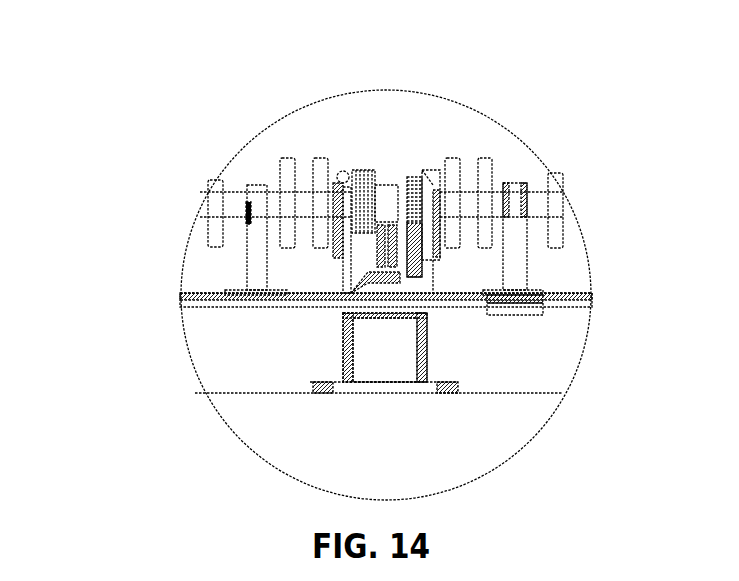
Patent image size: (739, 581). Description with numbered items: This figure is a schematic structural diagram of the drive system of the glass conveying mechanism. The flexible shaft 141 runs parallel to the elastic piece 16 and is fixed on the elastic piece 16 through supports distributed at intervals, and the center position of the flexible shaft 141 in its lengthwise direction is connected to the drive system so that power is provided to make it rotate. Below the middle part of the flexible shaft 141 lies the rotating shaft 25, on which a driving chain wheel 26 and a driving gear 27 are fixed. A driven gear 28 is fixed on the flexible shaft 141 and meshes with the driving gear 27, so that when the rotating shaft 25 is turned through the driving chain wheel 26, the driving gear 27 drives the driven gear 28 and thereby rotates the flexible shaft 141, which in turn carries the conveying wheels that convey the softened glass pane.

The elastic piece 16 is at (570, 308).
The rotating shaft 25 is at (363, 253).
The driving chain wheel 26 is at (380, 265).
The driving gear 27 is at (425, 253).
The driven gear 28 is at (415, 185).
The flexible shaft 141 is at (537, 205).